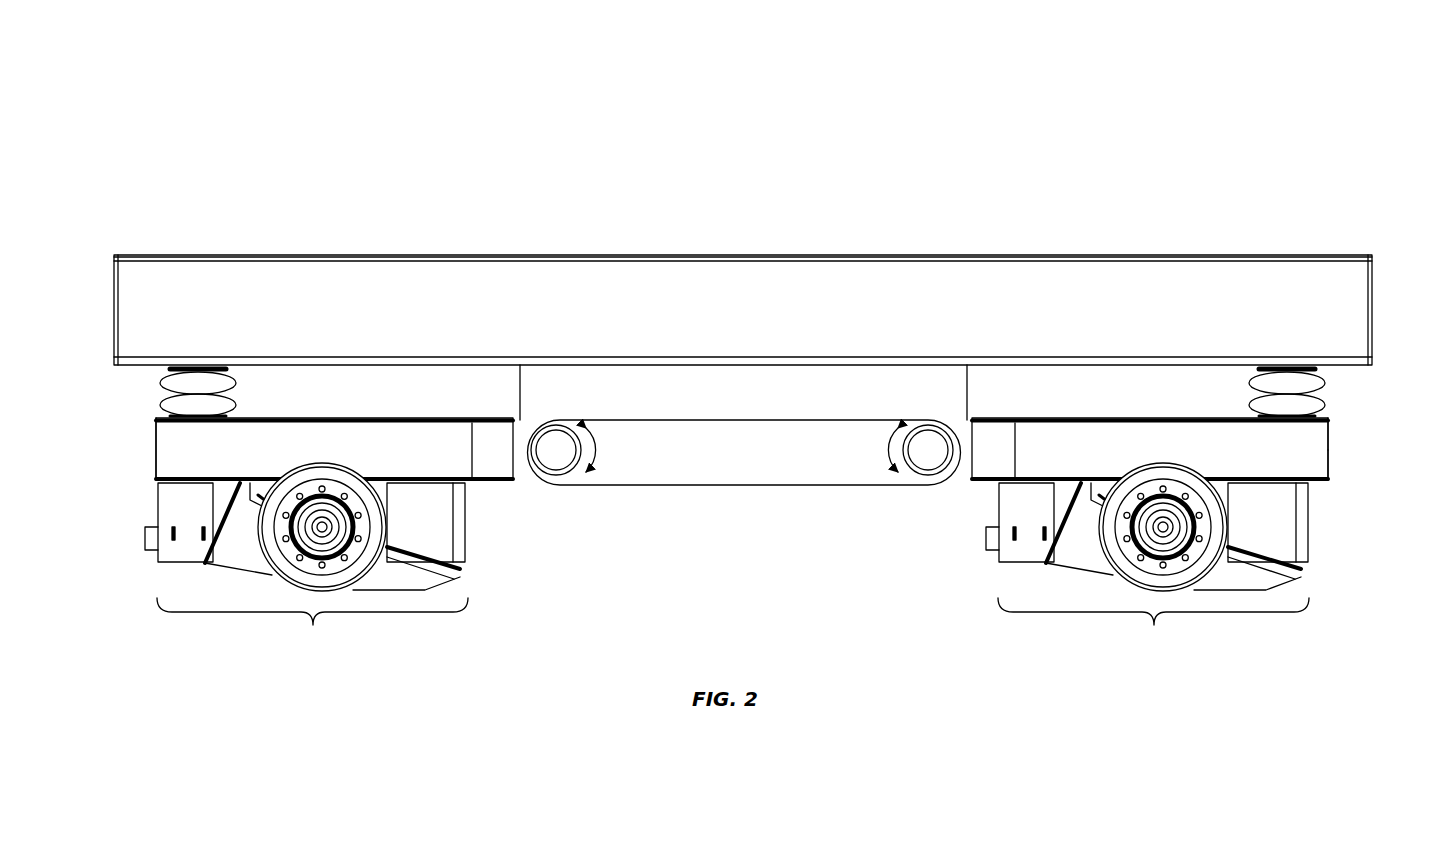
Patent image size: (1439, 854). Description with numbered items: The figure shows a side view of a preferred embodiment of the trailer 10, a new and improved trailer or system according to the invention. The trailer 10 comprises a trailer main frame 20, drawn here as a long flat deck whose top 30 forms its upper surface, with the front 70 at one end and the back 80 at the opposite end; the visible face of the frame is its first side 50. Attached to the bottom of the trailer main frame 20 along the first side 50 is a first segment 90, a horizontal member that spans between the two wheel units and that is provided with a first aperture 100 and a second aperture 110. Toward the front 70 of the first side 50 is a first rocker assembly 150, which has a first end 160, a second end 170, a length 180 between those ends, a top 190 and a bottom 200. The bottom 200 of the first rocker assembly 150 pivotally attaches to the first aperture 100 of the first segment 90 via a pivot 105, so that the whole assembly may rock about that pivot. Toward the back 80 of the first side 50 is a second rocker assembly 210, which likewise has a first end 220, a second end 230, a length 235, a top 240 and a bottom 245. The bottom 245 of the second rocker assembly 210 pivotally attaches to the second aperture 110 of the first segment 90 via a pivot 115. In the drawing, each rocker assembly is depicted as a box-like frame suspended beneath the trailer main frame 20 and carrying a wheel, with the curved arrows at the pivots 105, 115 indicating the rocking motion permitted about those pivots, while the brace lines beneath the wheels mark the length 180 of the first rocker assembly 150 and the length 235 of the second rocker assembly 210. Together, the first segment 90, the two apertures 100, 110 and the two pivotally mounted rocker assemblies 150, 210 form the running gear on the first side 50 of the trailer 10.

The trailer 10 is at (1222, 98).
The trailer main frame 20 is at (1352, 254).
The top 30 is at (1310, 254).
The first side 50 is at (1188, 254).
The front 70 is at (1372, 345).
The back 80 is at (122, 313).
The first segment 90 is at (730, 468).
The first aperture 100 is at (557, 460).
The pivot 105 is at (928, 440).
The second aperture 110 is at (932, 460).
The pivot 115 is at (557, 440).
The first rocker assembly 150 is at (1325, 462).
The first end 160 is at (1325, 433).
The second end 170 is at (965, 472).
The length 180 is at (1147, 554).
The top 190 is at (1087, 435).
The bottom 200 is at (1318, 484).
The second rocker assembly 210 is at (155, 443).
The first end 220 is at (155, 460).
The second end 230 is at (500, 440).
The length 235 is at (306, 556).
The top 240 is at (312, 435).
The bottom 245 is at (480, 488).